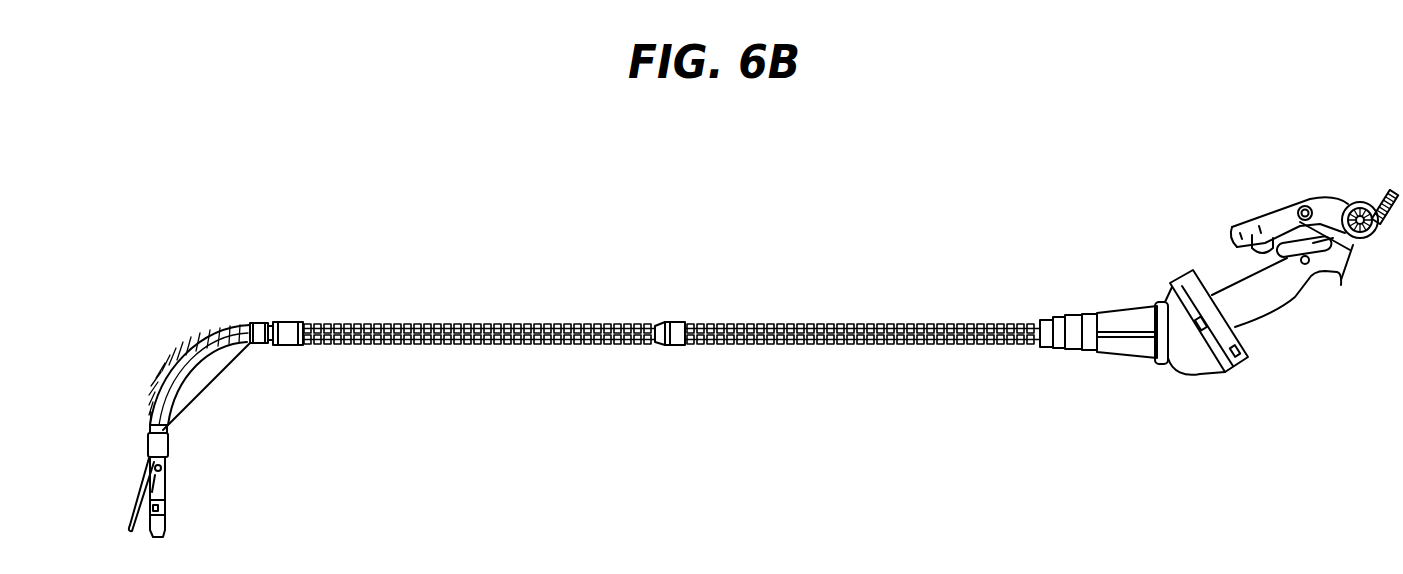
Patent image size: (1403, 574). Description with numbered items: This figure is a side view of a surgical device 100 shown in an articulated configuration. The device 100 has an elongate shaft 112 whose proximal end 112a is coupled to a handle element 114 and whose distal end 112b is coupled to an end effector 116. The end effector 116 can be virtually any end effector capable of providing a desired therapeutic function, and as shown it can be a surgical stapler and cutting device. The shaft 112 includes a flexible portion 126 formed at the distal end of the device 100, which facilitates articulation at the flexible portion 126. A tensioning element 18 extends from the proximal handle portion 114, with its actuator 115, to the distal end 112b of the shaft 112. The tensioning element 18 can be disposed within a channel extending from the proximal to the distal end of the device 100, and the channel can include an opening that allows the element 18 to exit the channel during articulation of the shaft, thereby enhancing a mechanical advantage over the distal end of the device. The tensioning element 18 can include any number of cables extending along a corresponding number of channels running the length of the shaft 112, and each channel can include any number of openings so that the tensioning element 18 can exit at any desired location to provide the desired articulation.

The surgical device 100 is at (482, 196).
The elongate shaft 112 is at (736, 324).
The proximal end 112a is at (1093, 288).
The distal end 112b is at (318, 306).
The handle element 114 is at (1286, 180).
The actuator 115 is at (1341, 285).
The end effector 116 is at (175, 318).
The flexible portion 126 is at (172, 393).
The tensioning element 18 is at (223, 362).